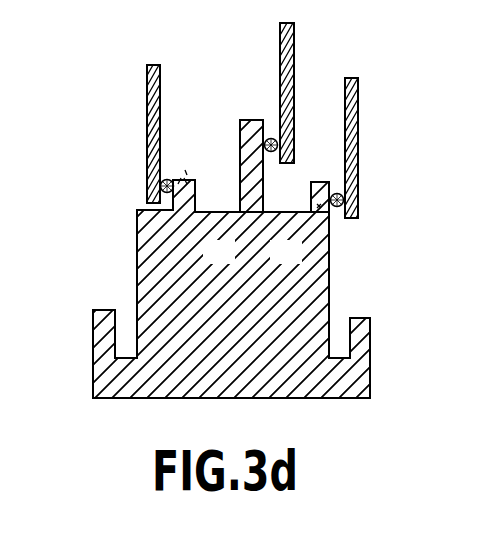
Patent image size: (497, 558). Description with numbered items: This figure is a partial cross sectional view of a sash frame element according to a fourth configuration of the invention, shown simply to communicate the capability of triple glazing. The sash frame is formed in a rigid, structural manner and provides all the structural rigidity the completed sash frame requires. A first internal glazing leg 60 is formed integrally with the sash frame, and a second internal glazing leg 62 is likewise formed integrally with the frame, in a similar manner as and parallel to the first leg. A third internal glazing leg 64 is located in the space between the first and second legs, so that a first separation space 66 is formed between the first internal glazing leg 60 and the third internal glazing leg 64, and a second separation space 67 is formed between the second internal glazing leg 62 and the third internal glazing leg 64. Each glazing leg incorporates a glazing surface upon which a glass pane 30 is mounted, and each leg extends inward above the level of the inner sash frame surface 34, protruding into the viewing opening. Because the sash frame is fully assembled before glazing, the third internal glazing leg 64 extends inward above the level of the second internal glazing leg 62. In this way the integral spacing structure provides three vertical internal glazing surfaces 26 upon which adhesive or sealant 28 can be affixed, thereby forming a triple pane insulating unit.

The vertical internal glazing surface 26 is at (135, 230).
The sealant 28 is at (257, 120).
The glass pane 30 is at (145, 107).
The inner sash frame surface 34 is at (138, 209).
The first internal glazing leg 60 is at (173, 180).
The second internal glazing leg 62 is at (320, 208).
The third internal glazing leg 64 is at (238, 142).
The first separation space 66 is at (240, 225).
The second separation space 67 is at (310, 225).